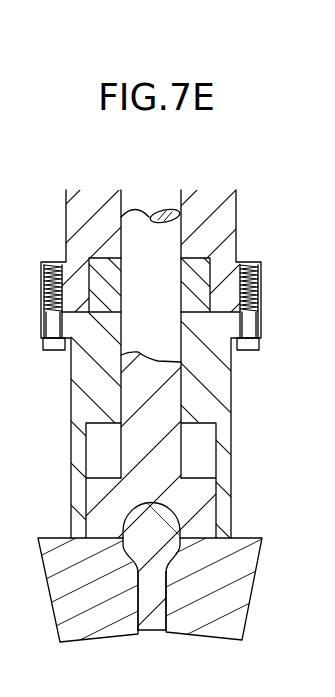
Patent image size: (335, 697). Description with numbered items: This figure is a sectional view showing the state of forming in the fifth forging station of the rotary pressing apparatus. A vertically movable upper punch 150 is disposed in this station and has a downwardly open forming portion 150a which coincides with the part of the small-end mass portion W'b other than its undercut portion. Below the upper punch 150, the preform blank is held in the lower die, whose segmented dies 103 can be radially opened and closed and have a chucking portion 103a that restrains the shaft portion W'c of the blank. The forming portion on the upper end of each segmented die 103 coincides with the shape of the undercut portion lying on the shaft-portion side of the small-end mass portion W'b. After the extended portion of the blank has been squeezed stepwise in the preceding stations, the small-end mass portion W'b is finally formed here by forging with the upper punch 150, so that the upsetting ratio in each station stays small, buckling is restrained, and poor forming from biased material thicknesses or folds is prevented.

The upper punch 150 is at (163, 392).
The forming portion 150a is at (124, 526).
The segmented dies 103 is at (247, 553).
The chucking portion 103a is at (167, 632).
The small-end mass portion W'b is at (216, 499).
The shaft portion W'c is at (217, 607).